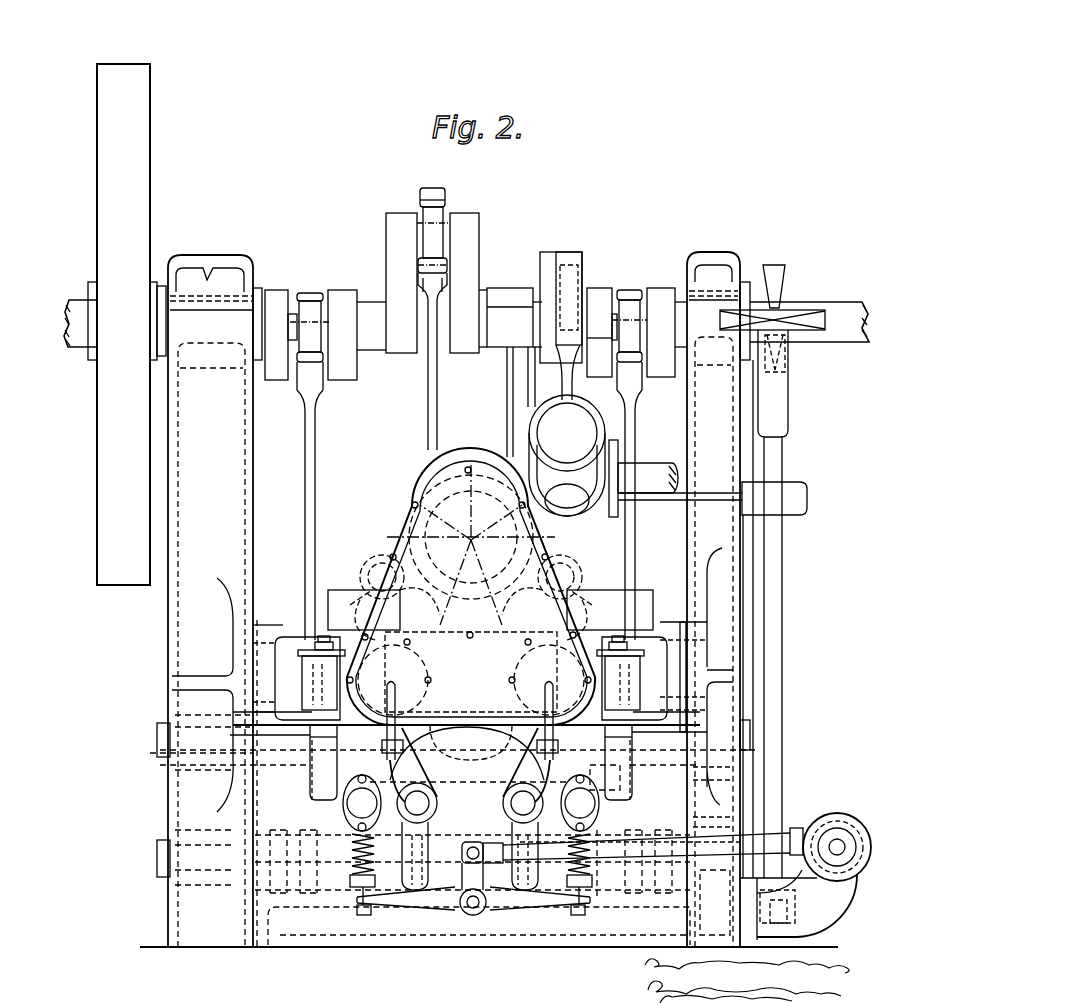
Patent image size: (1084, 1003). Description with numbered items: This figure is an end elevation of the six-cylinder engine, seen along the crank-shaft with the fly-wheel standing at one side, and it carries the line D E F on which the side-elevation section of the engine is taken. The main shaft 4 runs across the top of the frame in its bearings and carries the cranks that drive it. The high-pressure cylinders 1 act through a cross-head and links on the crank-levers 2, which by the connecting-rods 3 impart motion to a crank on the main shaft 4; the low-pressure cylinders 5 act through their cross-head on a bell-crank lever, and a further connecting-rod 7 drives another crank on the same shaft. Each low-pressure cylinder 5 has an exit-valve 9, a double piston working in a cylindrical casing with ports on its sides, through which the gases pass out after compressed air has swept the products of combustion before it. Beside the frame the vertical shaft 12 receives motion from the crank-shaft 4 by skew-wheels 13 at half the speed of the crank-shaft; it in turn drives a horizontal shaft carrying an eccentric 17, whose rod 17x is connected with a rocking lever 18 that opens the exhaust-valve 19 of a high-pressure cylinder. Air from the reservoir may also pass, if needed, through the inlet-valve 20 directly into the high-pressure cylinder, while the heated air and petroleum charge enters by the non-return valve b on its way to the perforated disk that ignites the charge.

The high-pressure cylinder 1 is at (340, 637).
The crank-lever 2 is at (311, 783).
The connecting-rod 3 is at (310, 469).
The main shaft 4 is at (466, 296).
The low-pressure cylinder 5 is at (440, 500).
The connecting-rod 7 is at (428, 383).
The exit-valve 9 is at (520, 460).
The vertical shaft 12 is at (782, 583).
The skew-wheels 13 is at (790, 312).
The eccentric 17 is at (834, 838).
The rod 17x is at (693, 837).
The rocking lever 18 is at (445, 906).
The exhaust-valve 19 is at (471, 845).
The inlet-valve 20 is at (445, 800).
The non-return valve b is at (471, 678).
The section line point D is at (419, 730).
The section line point E is at (387, 452).
The section line point F is at (471, 465).